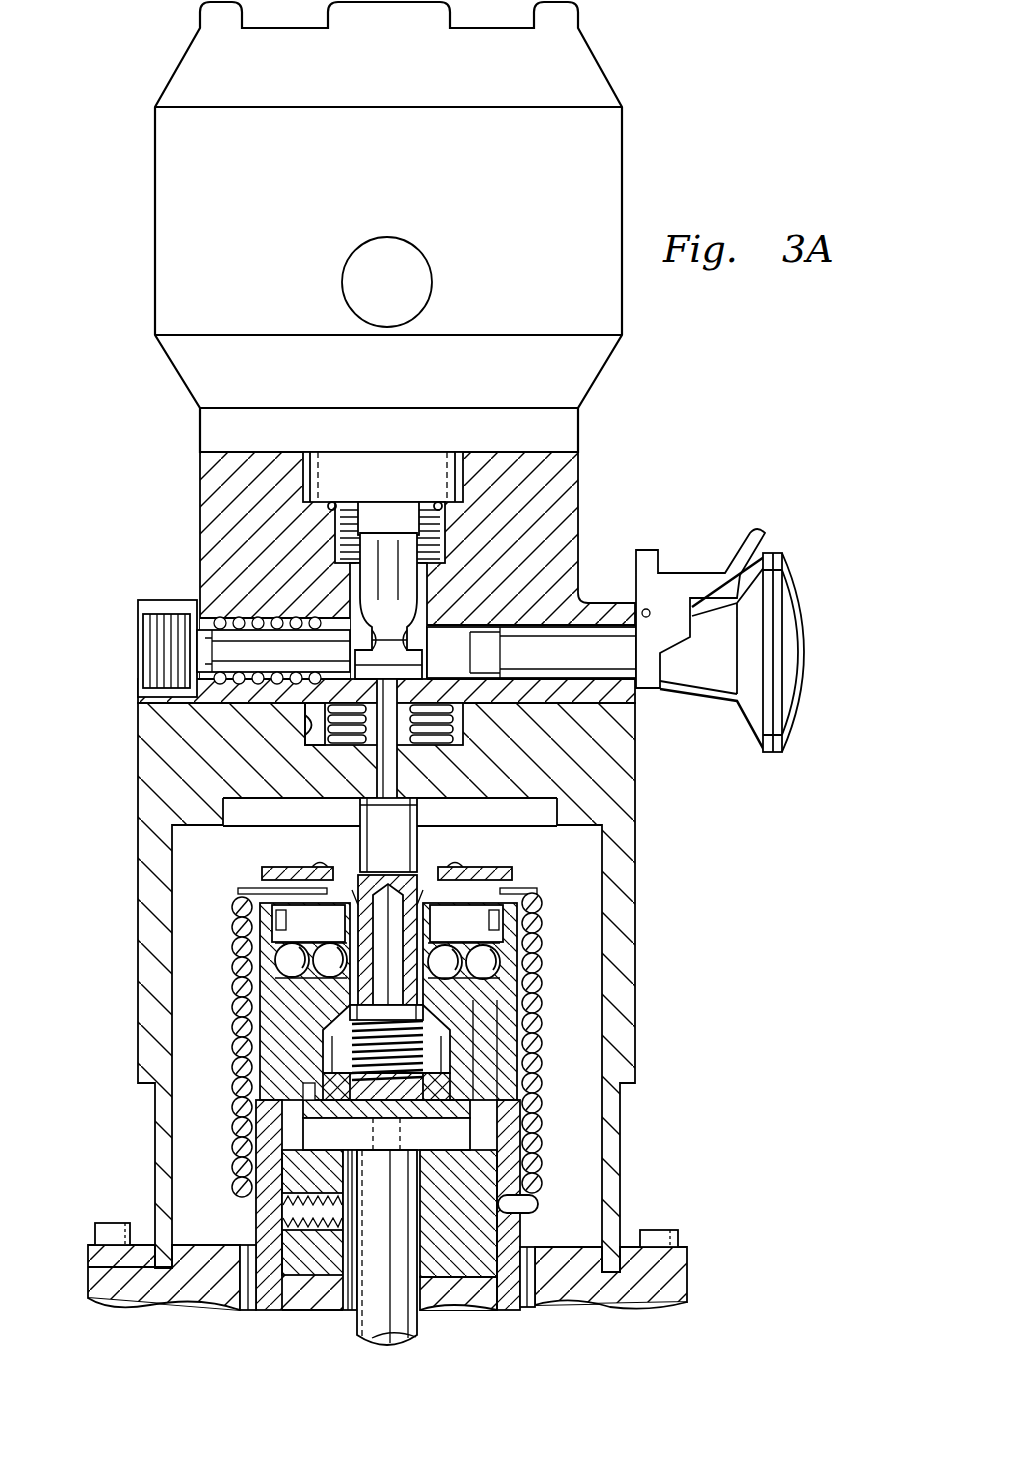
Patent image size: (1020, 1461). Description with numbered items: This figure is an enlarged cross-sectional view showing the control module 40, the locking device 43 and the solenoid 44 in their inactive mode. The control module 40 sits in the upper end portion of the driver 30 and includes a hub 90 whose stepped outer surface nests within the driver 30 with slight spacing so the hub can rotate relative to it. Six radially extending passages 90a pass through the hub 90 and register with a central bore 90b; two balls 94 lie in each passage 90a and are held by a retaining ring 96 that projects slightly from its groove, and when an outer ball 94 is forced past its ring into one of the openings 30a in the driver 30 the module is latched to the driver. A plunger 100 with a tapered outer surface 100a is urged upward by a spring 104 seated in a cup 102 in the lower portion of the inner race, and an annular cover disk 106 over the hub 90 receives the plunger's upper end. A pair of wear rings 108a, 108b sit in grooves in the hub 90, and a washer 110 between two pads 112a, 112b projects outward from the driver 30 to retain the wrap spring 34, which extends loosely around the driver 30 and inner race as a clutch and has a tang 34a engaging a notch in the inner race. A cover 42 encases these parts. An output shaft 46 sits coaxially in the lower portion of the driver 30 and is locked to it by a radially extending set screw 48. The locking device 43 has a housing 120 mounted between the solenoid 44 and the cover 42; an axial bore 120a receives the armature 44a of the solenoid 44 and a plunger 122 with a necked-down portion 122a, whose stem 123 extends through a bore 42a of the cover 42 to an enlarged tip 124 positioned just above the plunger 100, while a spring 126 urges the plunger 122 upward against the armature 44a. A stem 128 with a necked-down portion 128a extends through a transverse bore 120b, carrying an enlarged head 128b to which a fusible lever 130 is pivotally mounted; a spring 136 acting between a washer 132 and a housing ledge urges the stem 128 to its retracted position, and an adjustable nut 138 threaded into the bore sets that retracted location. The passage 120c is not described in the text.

The driver 30 is at (541, 1065).
The openings 30a is at (242, 915).
The wrap spring 34 is at (540, 1120).
The tang 34a is at (538, 1210).
The control module 40 is at (572, 858).
The cover 42 is at (615, 830).
The bore 42a is at (305, 725).
The locking device 43 is at (204, 493).
The solenoid 44 is at (273, 199).
The armature 44a is at (345, 563).
The output shaft 46 is at (420, 1330).
The set screw 48 is at (313, 1232).
The hub 90 is at (520, 1022).
The passages 90a is at (275, 1000).
The central bore 90b is at (515, 925).
The balls 94 is at (278, 966).
The retaining ring 96 is at (280, 985).
The plunger 100 is at (405, 870).
The tapered outer surface 100a is at (312, 895).
The cup 102 is at (472, 1112).
The spring 104 is at (350, 1050).
The cover disk 106 is at (275, 880).
The wear ring 108a is at (240, 891).
The wear ring 108b is at (290, 1093).
The washer 110 is at (601, 900).
The pad 112a is at (480, 872).
The pad 112b is at (520, 892).
The housing 120 is at (578, 470).
The axial bore 120a is at (435, 600).
The transverse bore 120b is at (577, 615).
The passage 120c is at (468, 515).
The plunger 122 is at (365, 605).
The necked-down portion 122a is at (372, 640).
The stem 123 is at (385, 772).
The enlarged tip 124 is at (430, 810).
The spring 126 is at (440, 712).
The stem 128 is at (600, 663).
The necked-down portion 128a is at (495, 640).
The enlarged head 128b is at (773, 755).
The lever 130 is at (675, 575).
The washer 132 is at (200, 625).
The spring 136 is at (250, 620).
The nut 138 is at (138, 648).